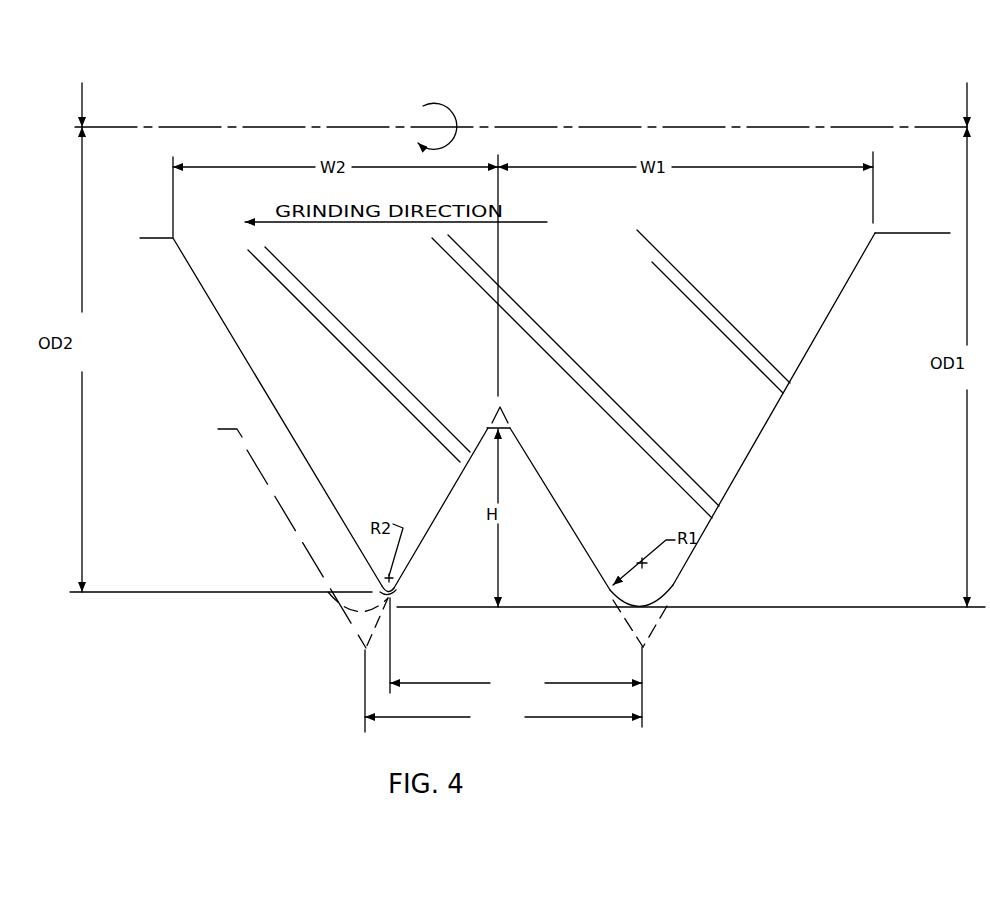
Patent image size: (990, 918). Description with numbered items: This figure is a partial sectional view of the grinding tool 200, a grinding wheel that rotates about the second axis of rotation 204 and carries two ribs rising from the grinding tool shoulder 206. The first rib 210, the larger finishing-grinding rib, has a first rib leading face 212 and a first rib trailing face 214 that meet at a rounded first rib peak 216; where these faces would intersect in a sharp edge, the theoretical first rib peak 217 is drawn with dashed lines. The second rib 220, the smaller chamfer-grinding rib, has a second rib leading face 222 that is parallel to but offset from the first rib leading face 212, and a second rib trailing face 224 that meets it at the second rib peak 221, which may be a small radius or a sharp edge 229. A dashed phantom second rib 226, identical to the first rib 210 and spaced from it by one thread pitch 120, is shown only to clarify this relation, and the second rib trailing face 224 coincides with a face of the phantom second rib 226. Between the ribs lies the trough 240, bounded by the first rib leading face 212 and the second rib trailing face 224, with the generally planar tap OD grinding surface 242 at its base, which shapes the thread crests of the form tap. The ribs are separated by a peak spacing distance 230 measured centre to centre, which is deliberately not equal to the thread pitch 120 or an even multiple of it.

The grinding tool 200 is at (512, 141).
The second axis of rotation 204 is at (432, 115).
The grinding tool shoulder 206 is at (156, 237).
The first rib 210 is at (608, 420).
The first rib leading face 212 is at (560, 509).
The first rib trailing face 214 is at (772, 413).
The first rib peak 216 is at (653, 610).
The theoretical first rib peak 217 is at (643, 647).
The second rib 220 is at (343, 428).
The second rib peak 221 is at (390, 594).
The second rib leading face 222 is at (259, 380).
The second rib trailing face 224 is at (463, 477).
The phantom second rib 226 is at (270, 492).
The sharp edge 229 is at (390, 604).
The trough 240 is at (490, 536).
The tap OD grinding surface 242 is at (513, 424).
The peak spacing distance 230 is at (516, 662).
The thread pitch 120 is at (503, 691).